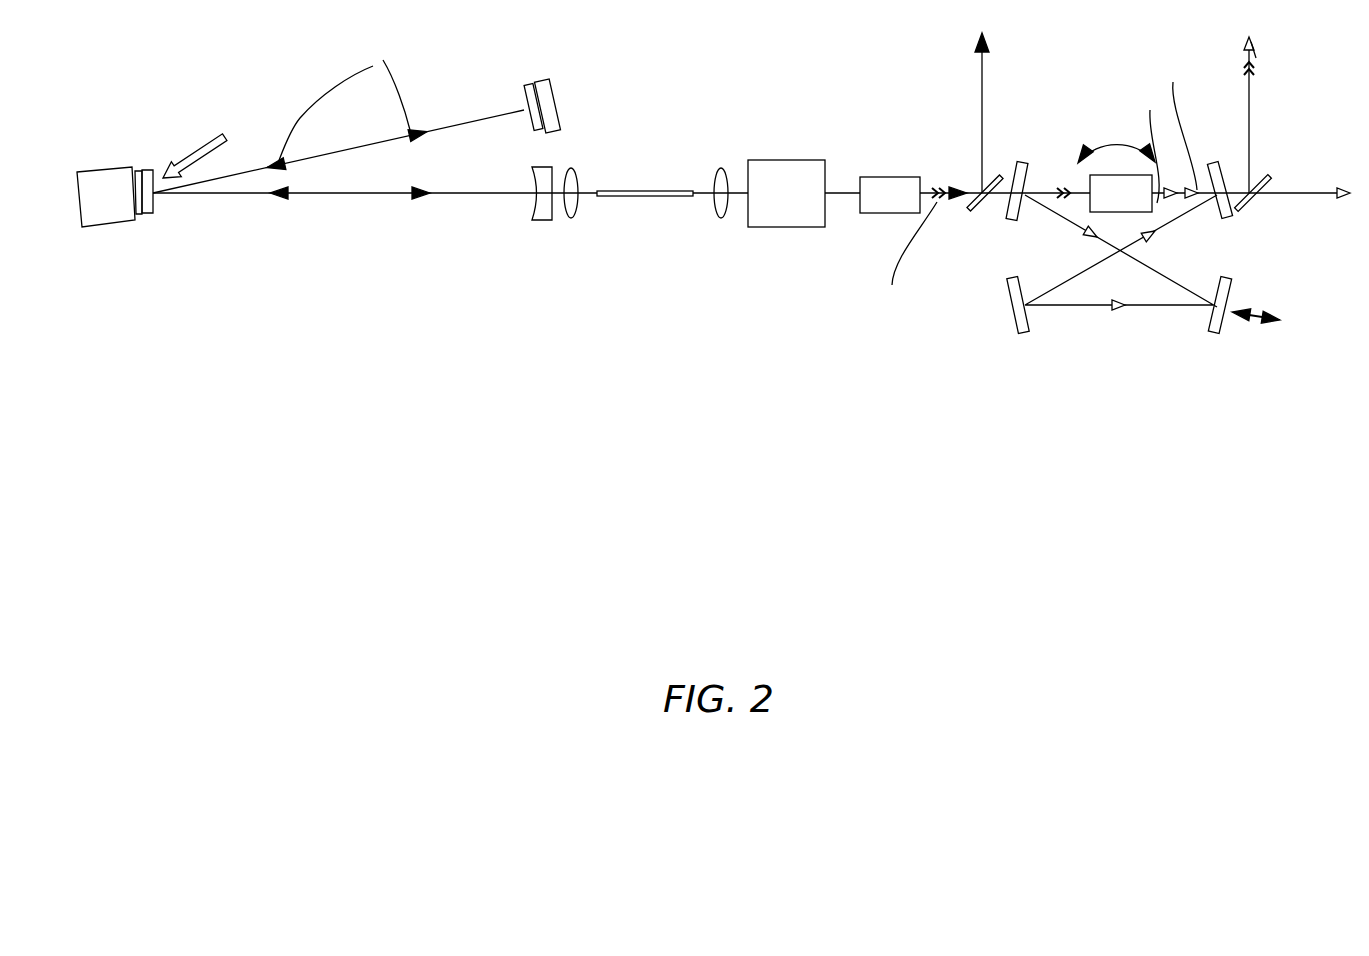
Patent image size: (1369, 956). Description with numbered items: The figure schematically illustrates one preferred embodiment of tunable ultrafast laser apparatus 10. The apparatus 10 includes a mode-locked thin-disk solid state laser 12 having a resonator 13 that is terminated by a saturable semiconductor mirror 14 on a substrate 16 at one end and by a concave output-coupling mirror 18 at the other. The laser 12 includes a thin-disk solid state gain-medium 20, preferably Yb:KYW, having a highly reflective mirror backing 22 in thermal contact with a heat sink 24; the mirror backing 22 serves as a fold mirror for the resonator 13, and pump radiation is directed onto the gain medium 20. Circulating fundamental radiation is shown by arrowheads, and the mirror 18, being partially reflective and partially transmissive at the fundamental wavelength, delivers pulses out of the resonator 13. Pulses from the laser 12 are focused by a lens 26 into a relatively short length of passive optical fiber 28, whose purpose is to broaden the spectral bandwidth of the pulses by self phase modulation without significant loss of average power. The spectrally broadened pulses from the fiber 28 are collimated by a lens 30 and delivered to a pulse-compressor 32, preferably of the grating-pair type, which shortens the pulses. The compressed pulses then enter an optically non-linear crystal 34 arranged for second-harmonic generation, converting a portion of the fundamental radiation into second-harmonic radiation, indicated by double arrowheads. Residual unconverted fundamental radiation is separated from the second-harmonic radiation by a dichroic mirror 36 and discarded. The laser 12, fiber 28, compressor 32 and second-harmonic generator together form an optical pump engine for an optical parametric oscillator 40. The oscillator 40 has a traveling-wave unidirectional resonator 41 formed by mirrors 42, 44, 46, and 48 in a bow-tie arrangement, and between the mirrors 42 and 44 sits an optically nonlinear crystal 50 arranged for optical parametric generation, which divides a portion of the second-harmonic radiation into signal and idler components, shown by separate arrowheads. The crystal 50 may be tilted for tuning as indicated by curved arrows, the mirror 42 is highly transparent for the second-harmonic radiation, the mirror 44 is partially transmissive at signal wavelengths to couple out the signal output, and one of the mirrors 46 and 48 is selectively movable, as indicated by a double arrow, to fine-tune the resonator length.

The tunable ultrafast laser apparatus 10 is at (558, 568).
The mode-locked thin-disk solid state laser 12 is at (378, 321).
The resonator 13 is at (471, 119).
The saturable semiconductor mirror 14 is at (523, 100).
The substrate 16 is at (552, 92).
The concave output-coupling mirror 18 is at (532, 207).
The thin-disk solid state gain-medium 20 is at (148, 170).
The highly reflective mirror backing 22 is at (139, 214).
The heat sink 24 is at (102, 222).
The lens 26 is at (568, 208).
The optical fiber 28 is at (638, 200).
The lens 30 is at (723, 167).
The pulse-compressor 32 is at (772, 220).
The optically non-linear crystal 34 is at (890, 177).
The dichroic mirror 36 is at (982, 207).
The optical parametric oscillator 40 is at (1082, 370).
The traveling-wave unidirectional resonator 41 is at (1163, 299).
The mirror 42 is at (1028, 175).
The mirror 44 is at (1212, 212).
The mirror 46 is at (1016, 316).
The mirror 48 is at (1224, 313).
The optically nonlinear crystal 50 is at (1117, 176).